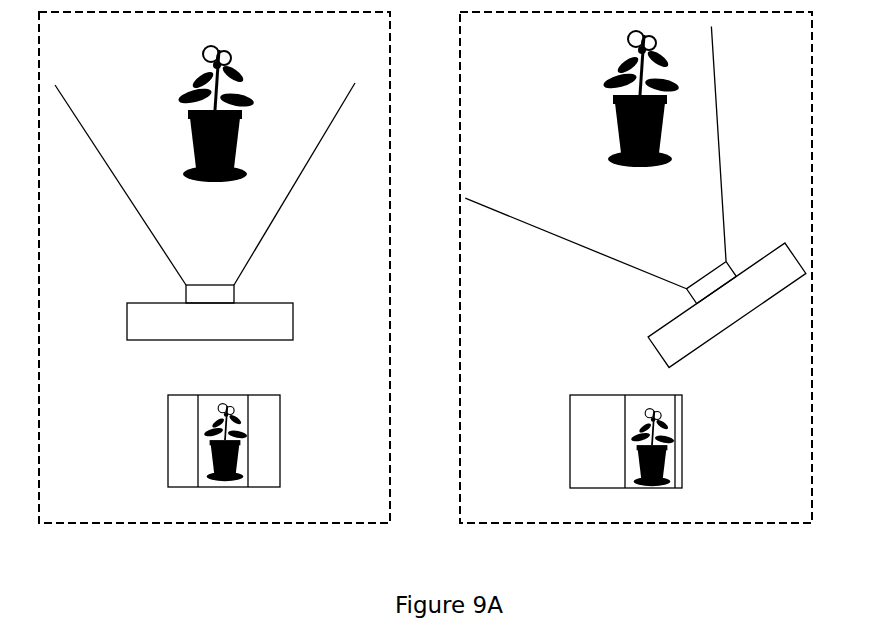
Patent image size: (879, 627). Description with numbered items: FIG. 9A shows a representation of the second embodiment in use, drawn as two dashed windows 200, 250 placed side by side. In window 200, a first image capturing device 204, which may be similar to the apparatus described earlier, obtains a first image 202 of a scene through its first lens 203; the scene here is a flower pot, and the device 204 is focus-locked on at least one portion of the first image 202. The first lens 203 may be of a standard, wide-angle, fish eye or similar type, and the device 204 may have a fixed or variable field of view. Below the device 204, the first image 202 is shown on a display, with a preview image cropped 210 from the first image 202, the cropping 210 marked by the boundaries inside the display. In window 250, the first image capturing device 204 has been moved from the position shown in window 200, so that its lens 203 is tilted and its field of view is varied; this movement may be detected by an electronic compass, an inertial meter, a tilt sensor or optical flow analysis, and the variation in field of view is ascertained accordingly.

The window 200 is at (187, 523).
The window 250 is at (753, 523).
The first image 202 is at (279, 418).
The first lens 203 is at (205, 292).
The first image capturing device 204 is at (152, 315).
The cropped 210 is at (198, 477).